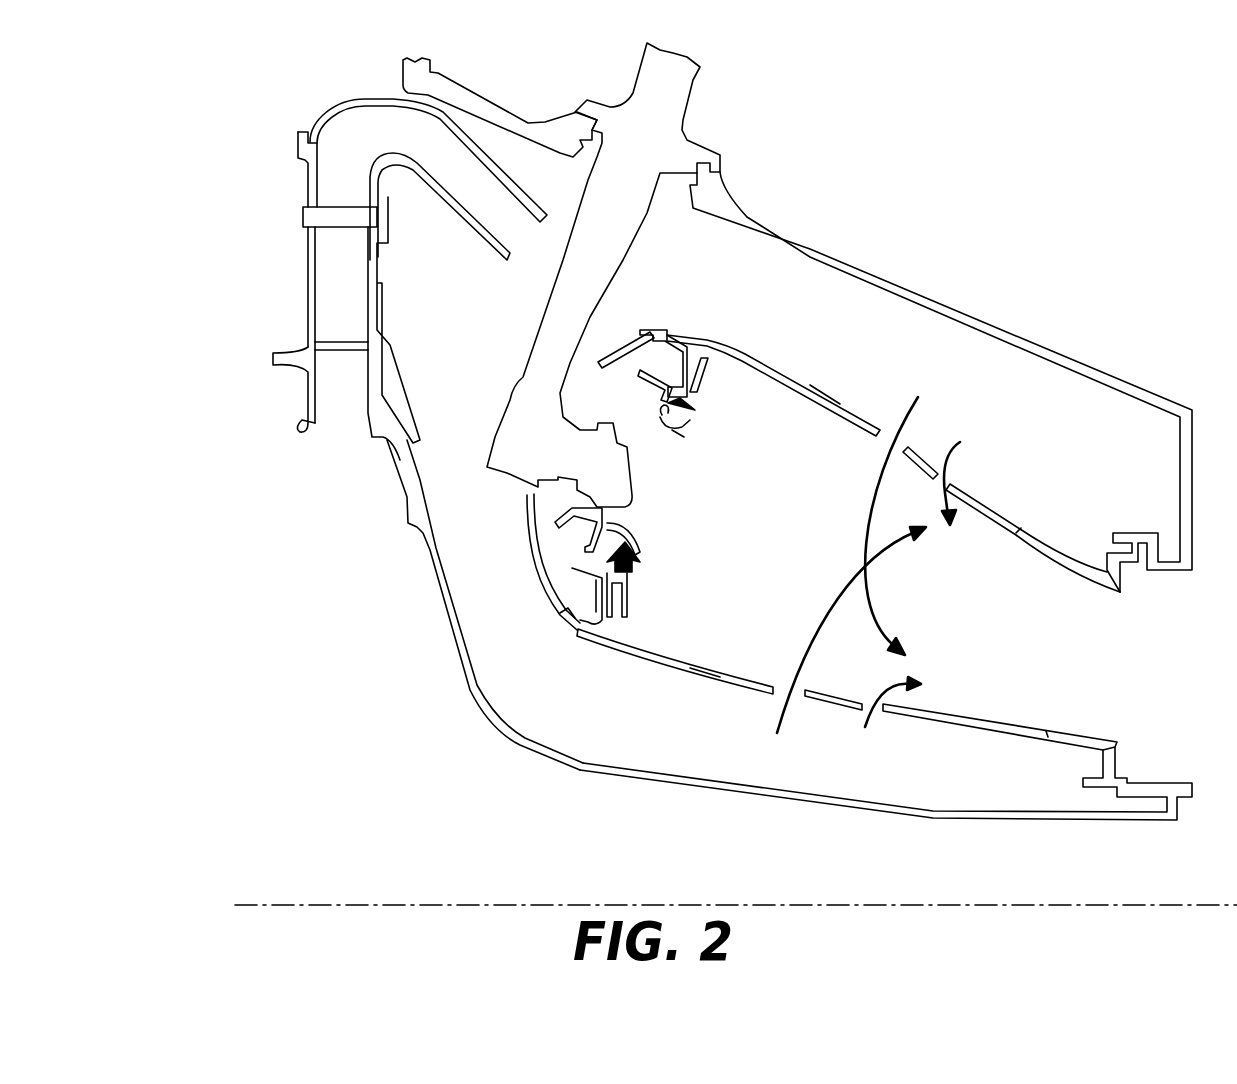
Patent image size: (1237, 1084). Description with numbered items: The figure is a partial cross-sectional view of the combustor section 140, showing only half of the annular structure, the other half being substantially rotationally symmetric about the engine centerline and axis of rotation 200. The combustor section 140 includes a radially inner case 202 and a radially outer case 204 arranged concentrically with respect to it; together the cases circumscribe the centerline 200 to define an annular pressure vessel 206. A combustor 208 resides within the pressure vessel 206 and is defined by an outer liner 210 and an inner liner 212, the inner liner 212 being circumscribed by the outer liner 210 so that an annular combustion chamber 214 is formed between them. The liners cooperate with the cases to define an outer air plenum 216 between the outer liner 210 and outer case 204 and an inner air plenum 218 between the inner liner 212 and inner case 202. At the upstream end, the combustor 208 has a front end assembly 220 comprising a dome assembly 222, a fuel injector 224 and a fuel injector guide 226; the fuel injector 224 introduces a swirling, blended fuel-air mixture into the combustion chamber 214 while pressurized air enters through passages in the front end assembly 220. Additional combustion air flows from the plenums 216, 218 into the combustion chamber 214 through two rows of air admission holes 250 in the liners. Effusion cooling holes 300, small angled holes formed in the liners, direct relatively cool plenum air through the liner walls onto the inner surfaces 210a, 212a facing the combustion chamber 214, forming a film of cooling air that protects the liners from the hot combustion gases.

The combustor section 140 is at (243, 181).
The centerline and axis of rotation 200 is at (290, 905).
The radially inner case 202 is at (627, 782).
The radially outer case 204 is at (807, 247).
The annular pressure vessel 206 is at (510, 712).
The combustor 208 is at (653, 675).
The outer liner 210 is at (723, 340).
The inner surface of the outer liner 210a is at (827, 397).
The inner liner 212 is at (743, 688).
The inner surface of the inner liner 212a is at (697, 670).
The annular combustion chamber 214 is at (693, 607).
The outer air plenum 216 is at (1110, 440).
The inner air plenum 218 is at (592, 701).
The front end assembly 220 is at (487, 346).
The dome assembly 222 is at (527, 536).
The fuel injector 224 is at (512, 408).
The fuel injector guide 226 is at (620, 420).
The air admission holes 250 is at (893, 443).
The effusion cooling holes 300 is at (1013, 524).